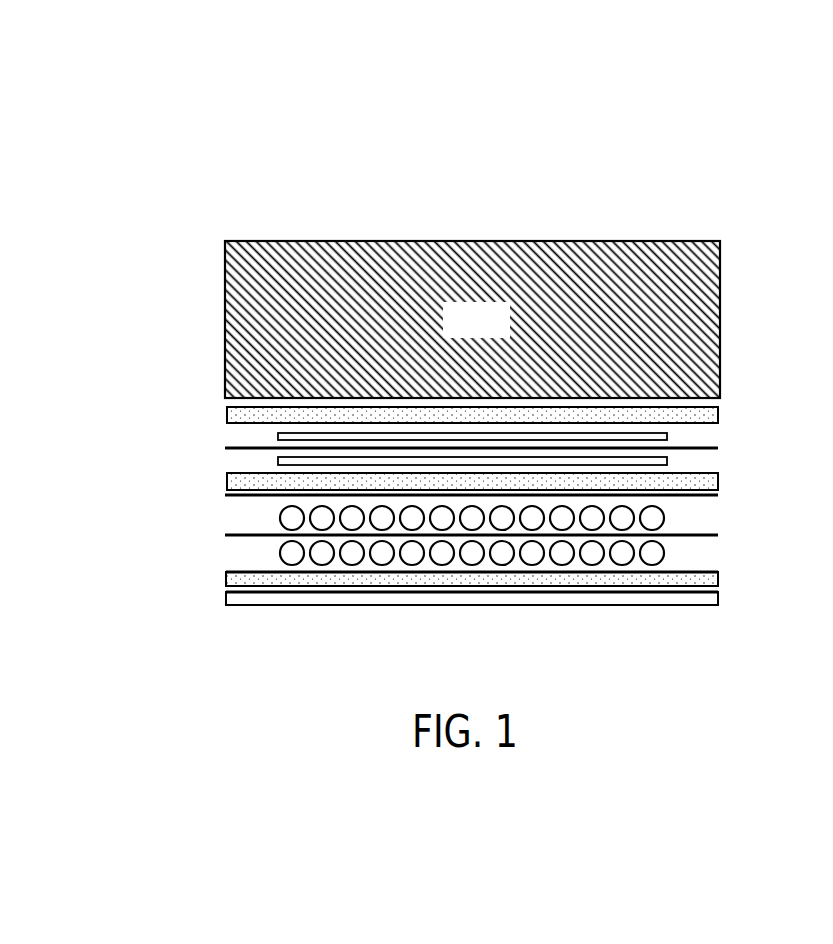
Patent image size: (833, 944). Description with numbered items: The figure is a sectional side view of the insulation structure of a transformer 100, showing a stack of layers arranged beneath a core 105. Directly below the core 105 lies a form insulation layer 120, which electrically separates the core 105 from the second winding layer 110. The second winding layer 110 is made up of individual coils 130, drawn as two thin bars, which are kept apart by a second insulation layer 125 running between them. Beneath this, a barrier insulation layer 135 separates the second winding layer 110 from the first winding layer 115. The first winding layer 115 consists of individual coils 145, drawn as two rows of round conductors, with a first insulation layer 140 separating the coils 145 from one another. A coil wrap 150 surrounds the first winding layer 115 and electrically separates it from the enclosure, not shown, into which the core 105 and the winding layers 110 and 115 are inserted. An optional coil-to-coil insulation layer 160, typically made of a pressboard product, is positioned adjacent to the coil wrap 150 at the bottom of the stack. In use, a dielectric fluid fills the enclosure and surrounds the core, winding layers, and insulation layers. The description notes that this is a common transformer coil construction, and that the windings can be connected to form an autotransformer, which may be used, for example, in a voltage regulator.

The transformer 100 is at (484, 148).
The core 105 is at (720, 283).
The second winding layer 110 is at (472, 447).
The first winding layer 115 is at (476, 533).
The form insulation layer 120 is at (718, 415).
The second insulation layer 125 is at (225, 448).
The coils 130 is at (278, 436).
The barrier insulation layer 135 is at (718, 481).
The first insulation layer 140 is at (225, 535).
The coils 145 is at (280, 518).
The coil wrap 150 is at (718, 580).
The coil-to-coil insulation layer 160 is at (718, 597).